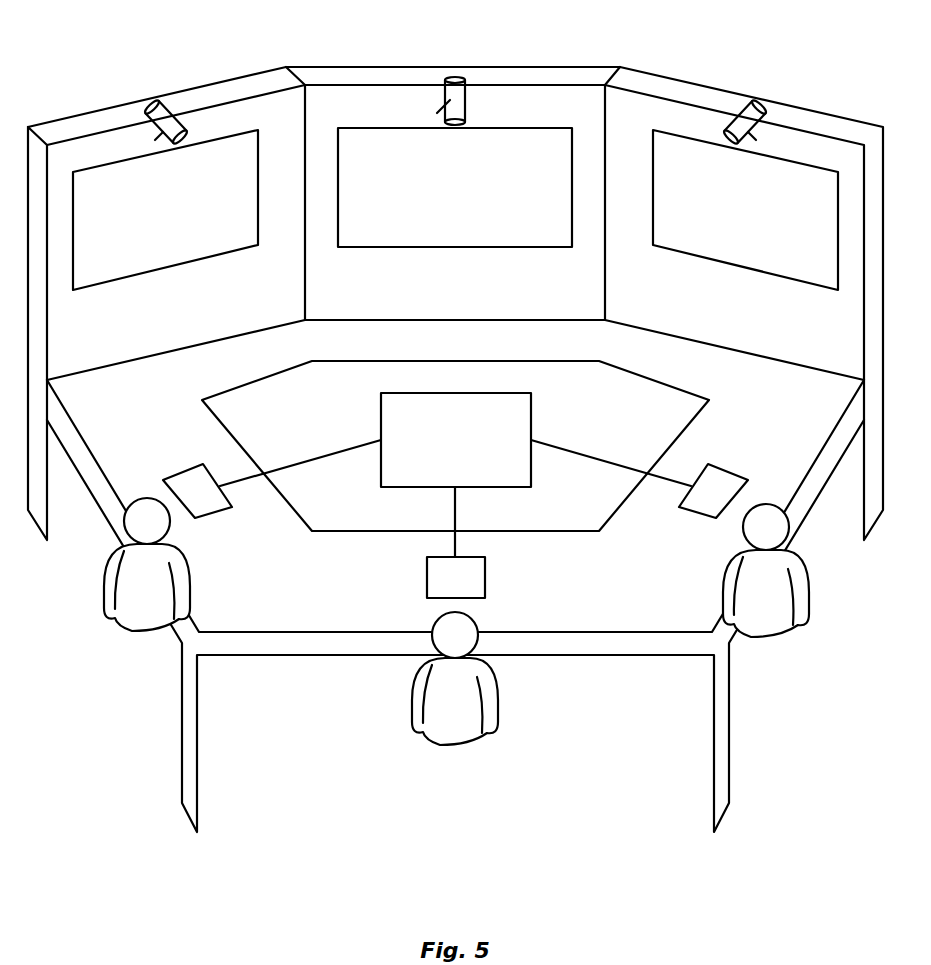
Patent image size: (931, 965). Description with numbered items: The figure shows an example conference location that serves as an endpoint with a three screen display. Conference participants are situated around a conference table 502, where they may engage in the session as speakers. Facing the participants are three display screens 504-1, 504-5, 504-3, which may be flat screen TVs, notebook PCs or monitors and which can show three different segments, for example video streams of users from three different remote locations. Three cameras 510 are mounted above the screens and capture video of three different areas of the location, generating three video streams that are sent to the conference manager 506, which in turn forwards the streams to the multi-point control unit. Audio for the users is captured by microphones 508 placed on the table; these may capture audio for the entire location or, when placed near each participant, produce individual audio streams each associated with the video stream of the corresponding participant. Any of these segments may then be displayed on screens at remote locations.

The conference table 502 is at (600, 656).
The display screen 504-1 is at (165, 210).
The display screen 504-3 is at (745, 210).
The display screen 504-5 is at (455, 187).
The conference manager 506 is at (532, 412).
The microphone 508 is at (213, 516).
The camera 510 is at (151, 100).